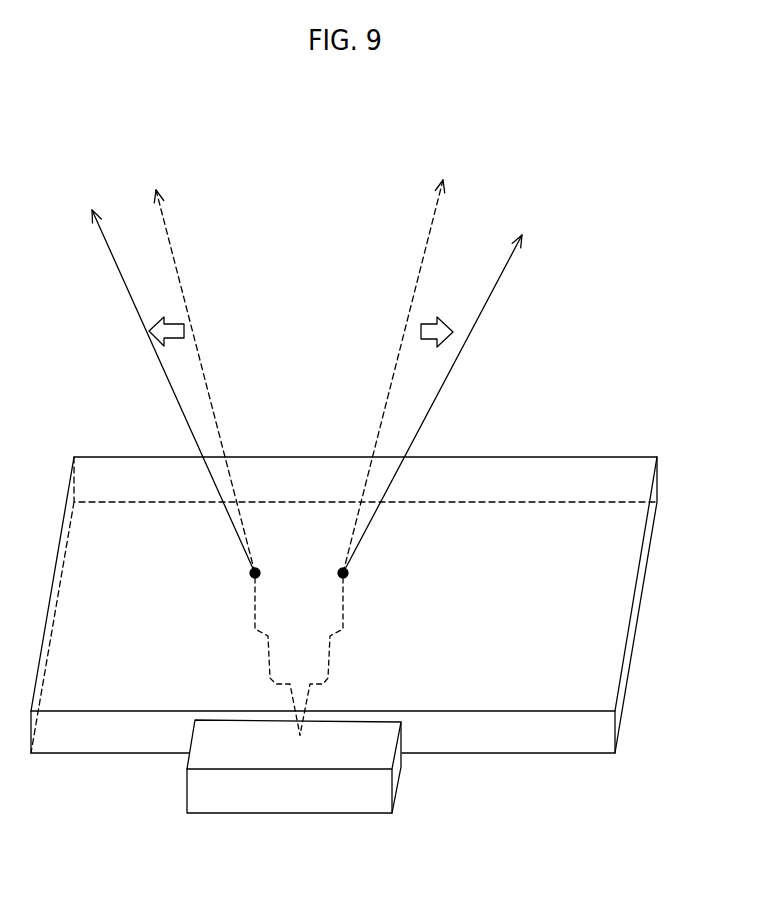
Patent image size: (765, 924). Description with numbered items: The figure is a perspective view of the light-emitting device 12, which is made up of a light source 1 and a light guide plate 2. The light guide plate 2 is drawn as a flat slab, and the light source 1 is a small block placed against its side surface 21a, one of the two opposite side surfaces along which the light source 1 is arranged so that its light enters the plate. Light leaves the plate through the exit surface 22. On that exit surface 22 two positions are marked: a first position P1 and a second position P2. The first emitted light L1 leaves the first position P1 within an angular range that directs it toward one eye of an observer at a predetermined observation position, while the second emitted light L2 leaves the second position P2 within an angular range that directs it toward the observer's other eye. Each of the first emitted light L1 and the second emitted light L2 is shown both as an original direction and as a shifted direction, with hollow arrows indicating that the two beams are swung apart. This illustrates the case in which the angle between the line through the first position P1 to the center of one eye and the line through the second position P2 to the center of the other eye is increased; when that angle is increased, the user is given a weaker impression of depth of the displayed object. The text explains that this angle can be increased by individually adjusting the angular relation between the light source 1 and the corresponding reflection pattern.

The light source 1 is at (222, 802).
The light guide plate 2 is at (488, 455).
The light-emitting device 12 is at (659, 213).
The side surface 21a is at (520, 742).
The exit surface 22 is at (613, 553).
The first position P1 is at (257, 570).
The second position P2 is at (341, 570).
The first emitted light L1 is at (128, 289).
The second emitted light L2 is at (418, 274).